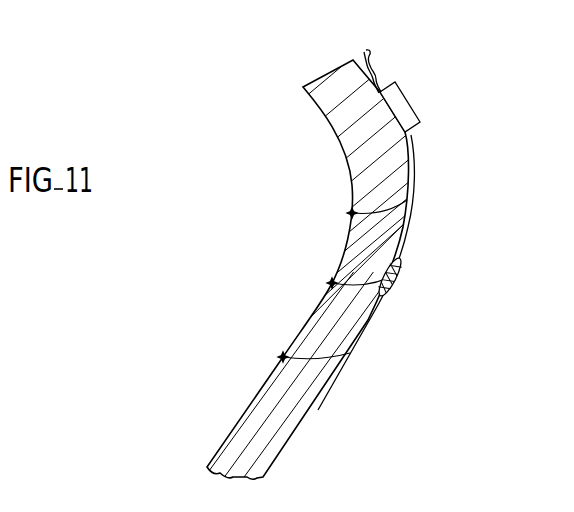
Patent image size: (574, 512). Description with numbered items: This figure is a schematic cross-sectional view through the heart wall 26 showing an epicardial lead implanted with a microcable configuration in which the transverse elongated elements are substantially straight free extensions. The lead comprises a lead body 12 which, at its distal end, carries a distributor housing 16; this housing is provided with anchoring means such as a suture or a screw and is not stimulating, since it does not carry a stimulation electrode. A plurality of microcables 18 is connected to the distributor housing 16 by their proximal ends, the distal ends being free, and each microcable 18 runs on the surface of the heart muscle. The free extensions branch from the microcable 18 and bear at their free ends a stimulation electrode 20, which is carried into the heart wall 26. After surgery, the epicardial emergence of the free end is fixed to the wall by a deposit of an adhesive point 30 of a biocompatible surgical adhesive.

The heart wall 26 is at (326, 88).
The lead body 12 is at (378, 59).
The distributor housing 16 is at (403, 108).
The microcable 18 is at (415, 174).
The stimulation electrode 20 is at (350, 212).
The adhesive point 30 is at (400, 276).